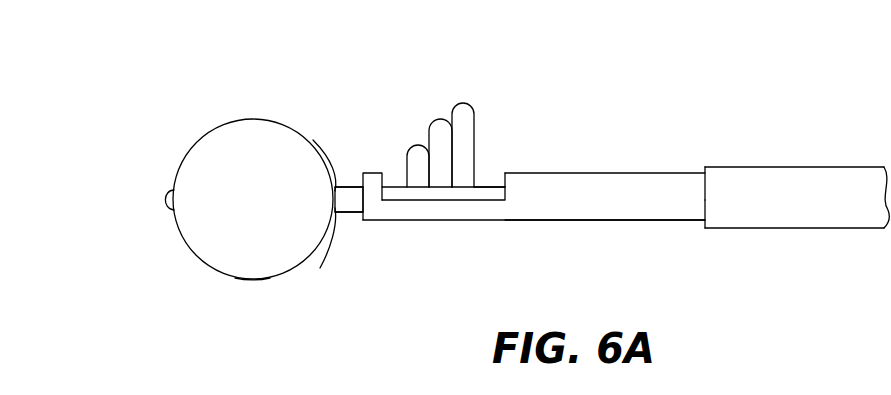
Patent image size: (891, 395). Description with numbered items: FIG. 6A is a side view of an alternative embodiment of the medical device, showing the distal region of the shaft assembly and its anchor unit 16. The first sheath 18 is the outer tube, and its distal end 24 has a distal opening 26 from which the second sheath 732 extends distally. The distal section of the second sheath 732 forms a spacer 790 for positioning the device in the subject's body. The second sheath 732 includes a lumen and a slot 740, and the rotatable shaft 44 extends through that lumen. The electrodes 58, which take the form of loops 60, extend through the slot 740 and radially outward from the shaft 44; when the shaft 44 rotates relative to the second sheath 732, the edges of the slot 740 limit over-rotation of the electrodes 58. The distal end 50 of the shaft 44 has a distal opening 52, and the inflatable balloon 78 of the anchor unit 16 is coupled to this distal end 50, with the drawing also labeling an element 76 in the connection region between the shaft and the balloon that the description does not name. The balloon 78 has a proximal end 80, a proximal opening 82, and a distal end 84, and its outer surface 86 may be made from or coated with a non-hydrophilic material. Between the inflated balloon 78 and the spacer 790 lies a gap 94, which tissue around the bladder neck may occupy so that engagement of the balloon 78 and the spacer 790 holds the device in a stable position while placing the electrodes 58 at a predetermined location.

The anchor unit 16 is at (216, 108).
The first sheath 18 is at (780, 167).
The distal end 24 is at (705, 167).
The distal opening 26 is at (704, 210).
The shaft 44 is at (486, 187).
The distal end 50 is at (336, 188).
The distal opening 52 is at (333, 207).
The electrodes 58 is at (441, 94).
The loops 60 is at (462, 100).
The connector body 76 is at (475, 195).
The inflatable balloon 78 is at (252, 131).
The proximal end 80 is at (340, 213).
The proximal opening 82 is at (313, 140).
The distal end 84 is at (165, 203).
The outer surface 86 is at (230, 279).
The gap 94 is at (356, 224).
The second sheath 732 is at (578, 173).
The slot 740 is at (505, 195).
The spacer 790 is at (369, 164).